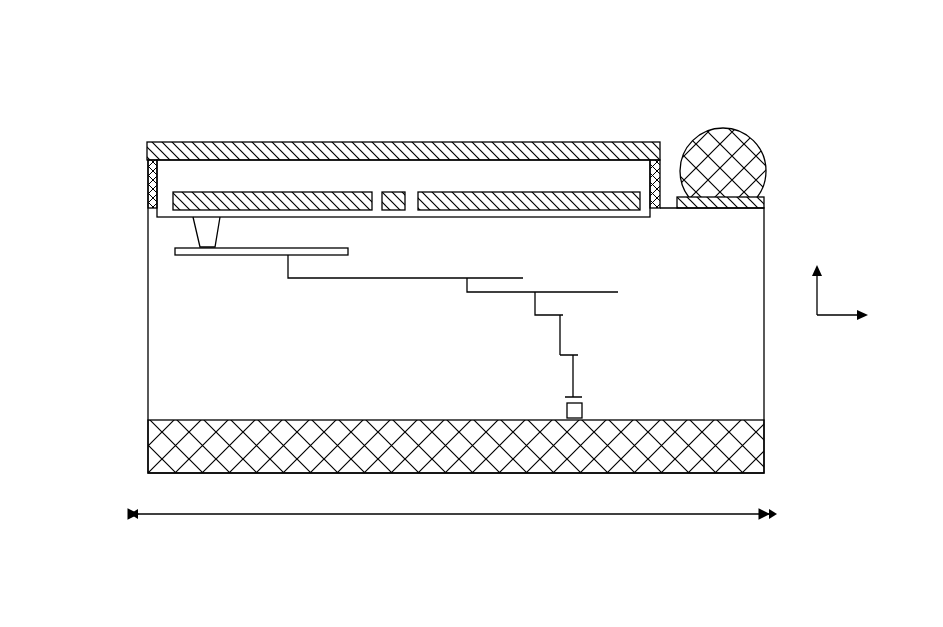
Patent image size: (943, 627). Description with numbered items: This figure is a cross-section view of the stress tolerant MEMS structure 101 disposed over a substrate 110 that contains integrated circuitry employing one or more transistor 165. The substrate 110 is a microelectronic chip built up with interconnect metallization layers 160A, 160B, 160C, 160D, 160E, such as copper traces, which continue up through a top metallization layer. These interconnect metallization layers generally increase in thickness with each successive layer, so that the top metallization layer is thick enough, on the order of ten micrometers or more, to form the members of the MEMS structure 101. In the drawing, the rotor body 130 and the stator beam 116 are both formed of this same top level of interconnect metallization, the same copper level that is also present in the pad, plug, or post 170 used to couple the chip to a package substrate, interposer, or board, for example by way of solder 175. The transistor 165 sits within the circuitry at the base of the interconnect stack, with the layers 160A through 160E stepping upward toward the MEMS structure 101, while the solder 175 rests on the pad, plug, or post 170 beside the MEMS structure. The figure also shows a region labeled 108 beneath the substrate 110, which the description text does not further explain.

The stress tolerant MEMS structure 101 is at (82, 96).
The base substrate 108 is at (486, 455).
The substrate 110 is at (140, 210).
The stator beam 116 is at (390, 195).
The rotor body 130 is at (292, 197).
The interconnect metallization layer 160A is at (562, 360).
The interconnect metallization layer 160B is at (537, 318).
The interconnect metallization layer 160C is at (470, 295).
The interconnect metallization layer 160D is at (334, 281).
The interconnect metallization layer 160E is at (245, 258).
The transistor 165 is at (591, 402).
The pad, plug, post 170 is at (765, 203).
The solder 175 is at (716, 145).